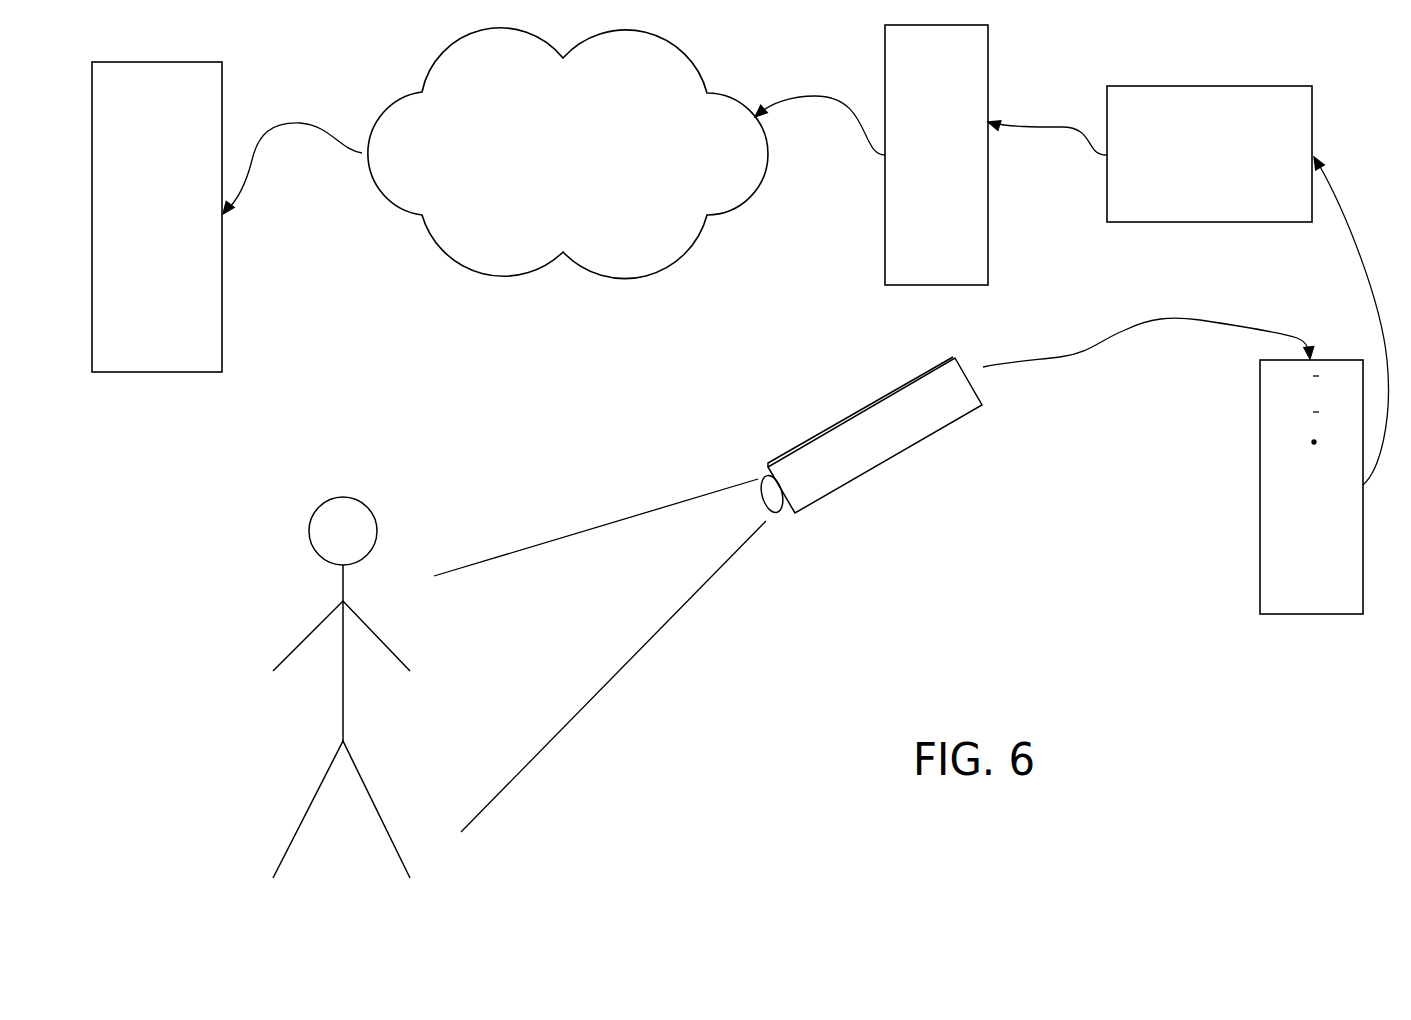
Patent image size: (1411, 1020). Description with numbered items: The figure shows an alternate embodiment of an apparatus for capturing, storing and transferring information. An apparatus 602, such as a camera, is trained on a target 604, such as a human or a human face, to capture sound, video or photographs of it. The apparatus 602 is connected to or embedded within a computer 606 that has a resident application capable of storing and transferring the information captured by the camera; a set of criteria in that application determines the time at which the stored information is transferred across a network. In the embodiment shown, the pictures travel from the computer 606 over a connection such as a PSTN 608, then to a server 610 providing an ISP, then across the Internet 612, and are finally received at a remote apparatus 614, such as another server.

The apparatus 602 is at (888, 457).
The target 604 is at (318, 620).
The computer 606 is at (1260, 547).
The PSTN 608 is at (1138, 86).
The server 610 is at (988, 48).
The Internet 612 is at (675, 257).
The remote apparatus 614 is at (222, 107).